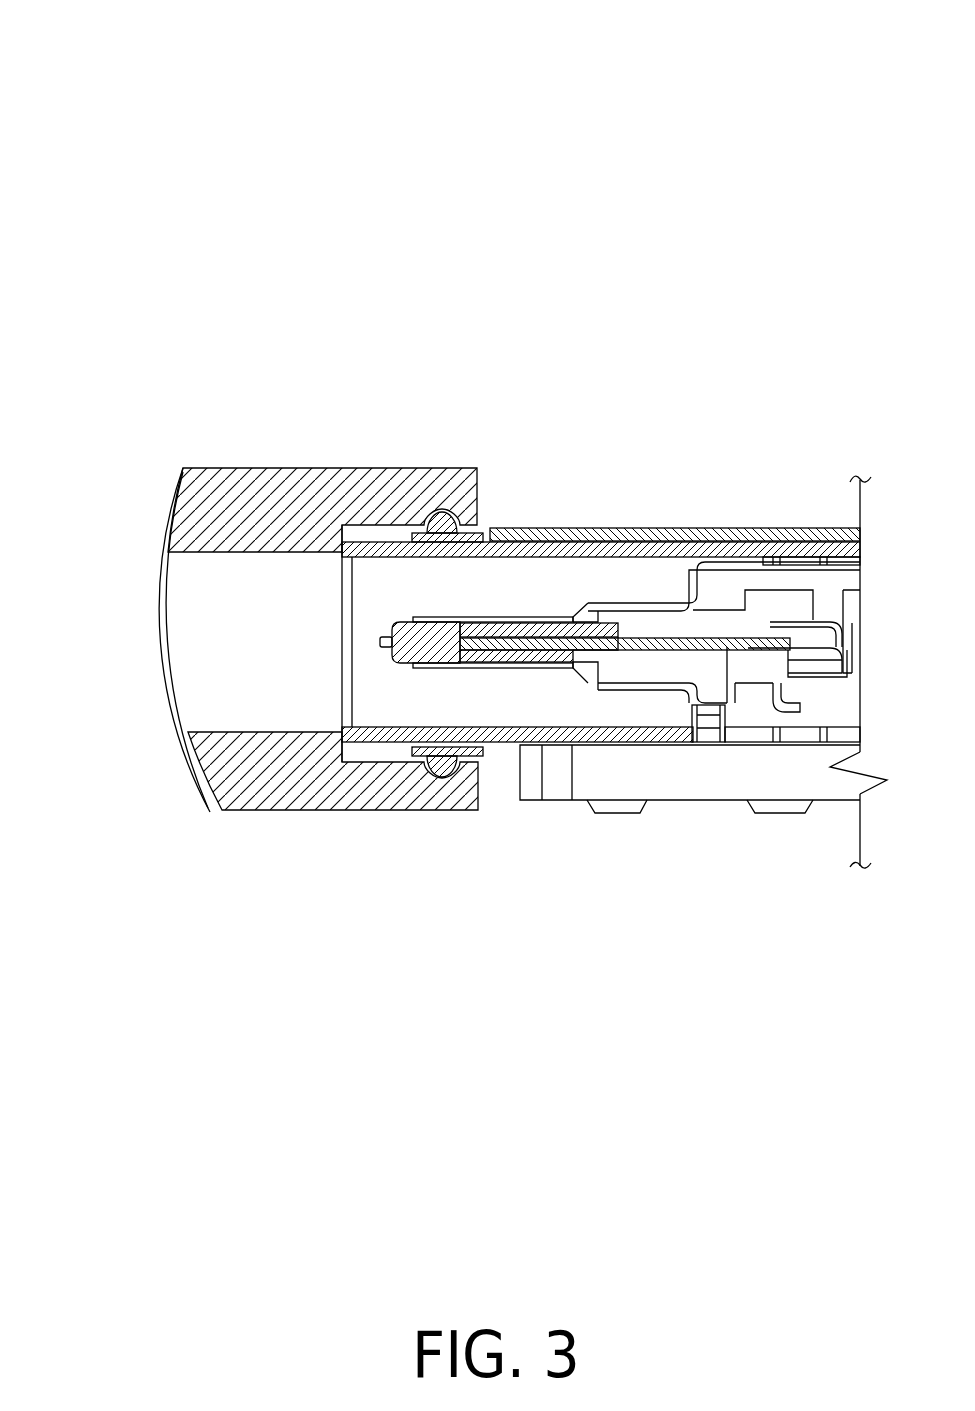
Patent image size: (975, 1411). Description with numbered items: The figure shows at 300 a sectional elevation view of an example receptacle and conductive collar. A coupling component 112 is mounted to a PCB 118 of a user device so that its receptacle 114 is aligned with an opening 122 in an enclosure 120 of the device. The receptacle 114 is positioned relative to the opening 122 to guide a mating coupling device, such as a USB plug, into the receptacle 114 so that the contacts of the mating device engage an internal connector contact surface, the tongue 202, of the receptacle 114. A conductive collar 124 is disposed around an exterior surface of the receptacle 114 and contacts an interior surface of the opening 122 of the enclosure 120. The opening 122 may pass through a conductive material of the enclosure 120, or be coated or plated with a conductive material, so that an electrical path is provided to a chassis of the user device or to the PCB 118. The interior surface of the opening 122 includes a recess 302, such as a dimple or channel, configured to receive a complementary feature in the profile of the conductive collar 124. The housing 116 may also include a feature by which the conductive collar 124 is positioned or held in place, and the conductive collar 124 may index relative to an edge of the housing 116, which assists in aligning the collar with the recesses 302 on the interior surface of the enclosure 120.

The sectional elevation view 300 is at (125, 58).
The coupling component 112 is at (520, 396).
The receptacle 114 is at (373, 562).
The housing 116 is at (628, 522).
The PCB 118 is at (707, 808).
The enclosure 120 is at (203, 798).
The opening 122 is at (202, 560).
The conductive collar 124 is at (489, 522).
The tongue 202 is at (400, 673).
The recess 302 is at (432, 510).